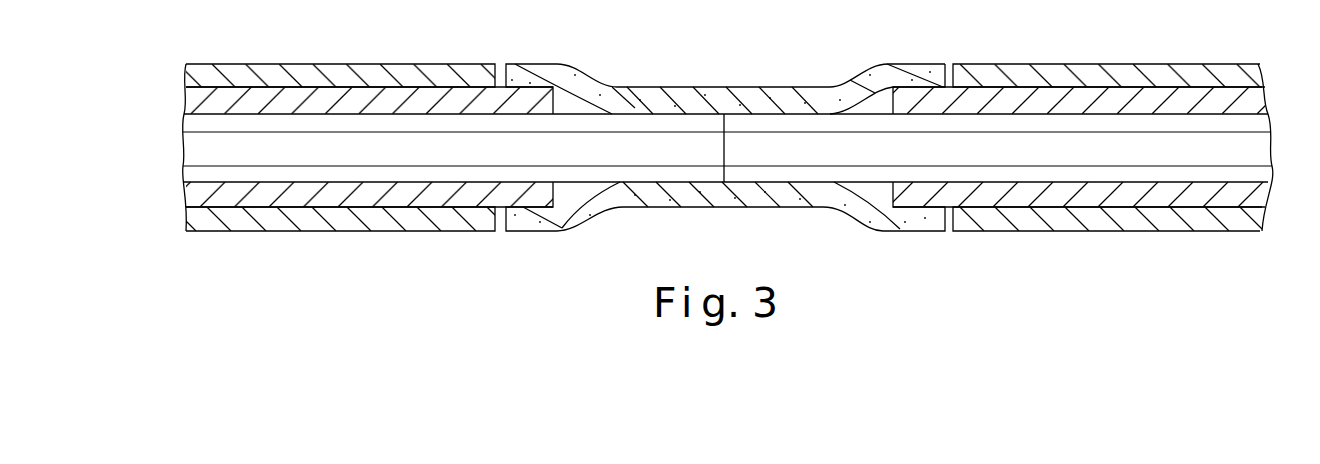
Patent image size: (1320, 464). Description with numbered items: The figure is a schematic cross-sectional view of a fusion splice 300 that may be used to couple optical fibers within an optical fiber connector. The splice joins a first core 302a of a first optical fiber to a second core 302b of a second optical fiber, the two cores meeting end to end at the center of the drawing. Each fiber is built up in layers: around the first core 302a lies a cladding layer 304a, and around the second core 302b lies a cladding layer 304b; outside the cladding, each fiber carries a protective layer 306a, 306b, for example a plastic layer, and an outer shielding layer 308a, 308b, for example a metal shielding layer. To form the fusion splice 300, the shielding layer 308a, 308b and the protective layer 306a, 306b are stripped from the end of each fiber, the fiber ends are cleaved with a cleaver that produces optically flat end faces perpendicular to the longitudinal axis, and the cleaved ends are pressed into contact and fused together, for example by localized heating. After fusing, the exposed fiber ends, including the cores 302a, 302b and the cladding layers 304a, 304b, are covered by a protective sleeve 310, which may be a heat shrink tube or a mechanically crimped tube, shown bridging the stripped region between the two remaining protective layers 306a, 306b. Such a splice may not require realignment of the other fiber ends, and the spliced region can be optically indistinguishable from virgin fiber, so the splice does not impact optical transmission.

The fusion splice 300 is at (629, 54).
The first core 302a is at (677, 158).
The second core 302b is at (762, 158).
The cladding layer 304a is at (623, 175).
The cladding layer 304b is at (852, 175).
The protective layer 306a is at (481, 208).
The protective layer 306b is at (938, 195).
The shielding layer 308a is at (273, 222).
The shielding layer 308b is at (1118, 225).
The protective sleeve 310 is at (663, 87).